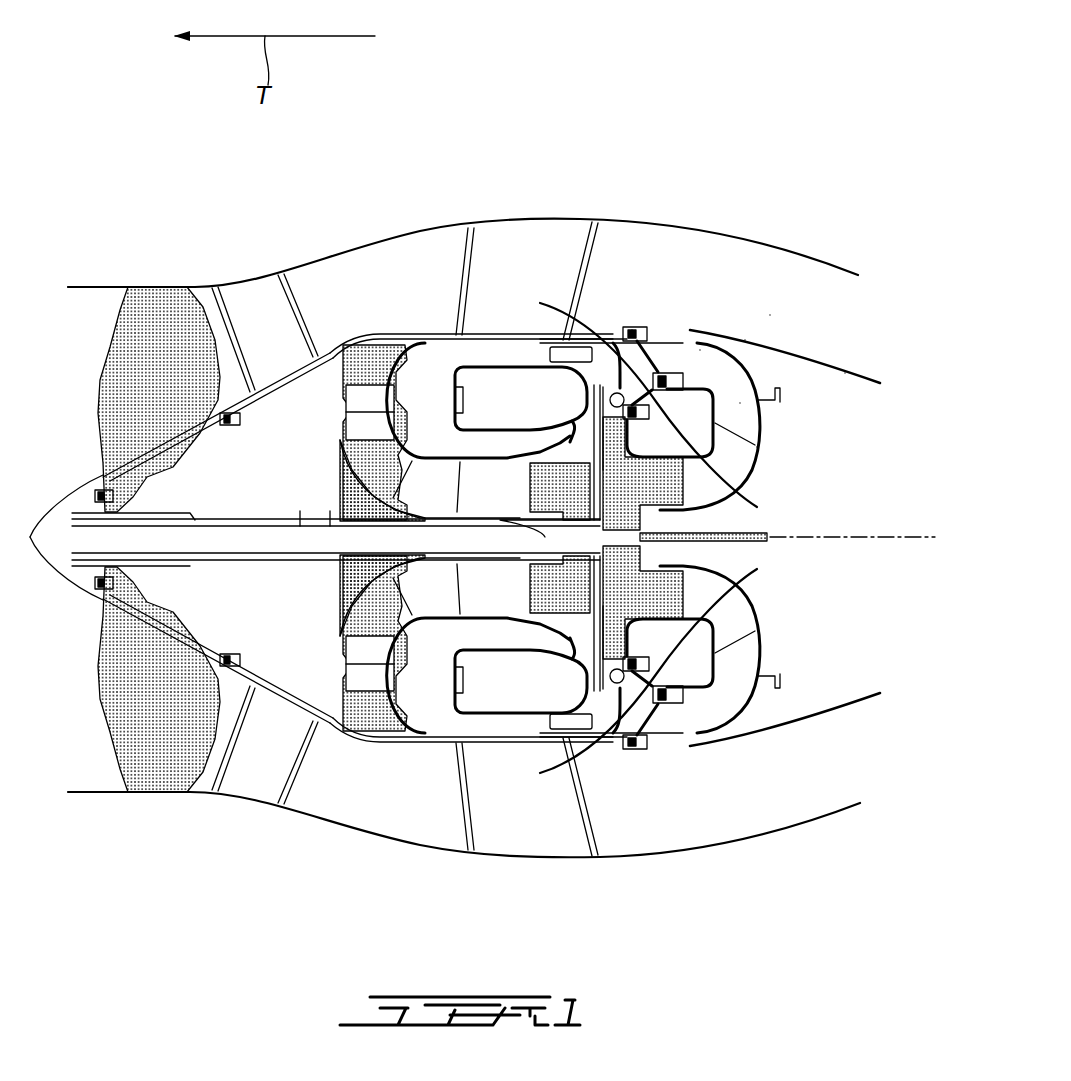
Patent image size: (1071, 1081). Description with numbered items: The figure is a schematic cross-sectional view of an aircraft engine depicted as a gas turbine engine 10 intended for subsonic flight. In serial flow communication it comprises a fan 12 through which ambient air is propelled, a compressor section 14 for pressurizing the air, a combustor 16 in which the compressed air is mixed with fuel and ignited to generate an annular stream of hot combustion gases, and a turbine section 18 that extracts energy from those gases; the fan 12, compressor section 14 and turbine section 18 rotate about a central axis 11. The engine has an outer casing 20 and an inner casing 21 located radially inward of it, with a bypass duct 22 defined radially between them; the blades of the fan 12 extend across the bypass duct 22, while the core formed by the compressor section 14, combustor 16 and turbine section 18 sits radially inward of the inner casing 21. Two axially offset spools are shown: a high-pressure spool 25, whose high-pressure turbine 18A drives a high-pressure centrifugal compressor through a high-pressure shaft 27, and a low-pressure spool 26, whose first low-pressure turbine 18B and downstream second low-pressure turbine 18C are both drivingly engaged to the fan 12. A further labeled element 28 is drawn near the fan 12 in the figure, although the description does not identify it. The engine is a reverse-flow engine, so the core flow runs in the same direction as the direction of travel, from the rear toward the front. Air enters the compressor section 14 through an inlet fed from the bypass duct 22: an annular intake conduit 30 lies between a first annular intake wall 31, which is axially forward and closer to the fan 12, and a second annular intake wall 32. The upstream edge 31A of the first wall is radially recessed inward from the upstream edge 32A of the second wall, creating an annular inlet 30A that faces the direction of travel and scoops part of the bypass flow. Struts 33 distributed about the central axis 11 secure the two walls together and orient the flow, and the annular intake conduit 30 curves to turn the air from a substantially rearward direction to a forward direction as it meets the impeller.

The gas turbine engine 10 is at (512, 178).
The central axis 11 is at (911, 535).
The fan 12 is at (149, 345).
The compressor section 14 is at (642, 443).
The combustor 16 is at (487, 690).
The turbine section 18 is at (297, 600).
The high-pressure turbine 18A is at (564, 594).
The first low-pressure turbine 18B is at (410, 432).
The second low-pressure turbine 18C is at (328, 343).
The outer casing 20 is at (673, 228).
The inner casing 21 is at (845, 373).
The bypass duct 22 is at (772, 313).
The high-pressure spool 25 is at (490, 540).
The low-pressure spool 26 is at (128, 601).
The high-pressure shaft 27 is at (720, 548).
The fan hub 28 is at (227, 513).
The annular intake conduit 30 is at (730, 360).
The annular inlet 30A is at (700, 350).
The first annular intake wall 31 is at (629, 396).
The upstream edge 31A is at (632, 330).
The second annular intake wall 32 is at (757, 447).
The upstream edge 32A is at (745, 340).
The struts 33 is at (740, 403).